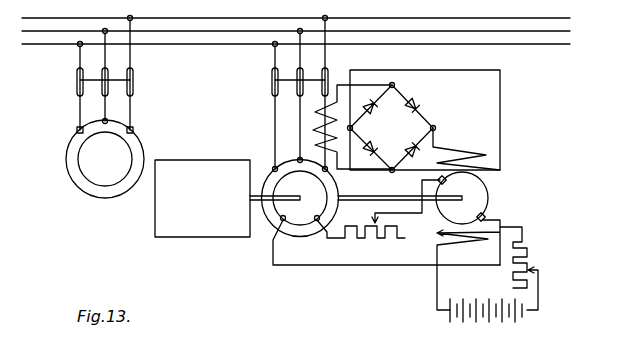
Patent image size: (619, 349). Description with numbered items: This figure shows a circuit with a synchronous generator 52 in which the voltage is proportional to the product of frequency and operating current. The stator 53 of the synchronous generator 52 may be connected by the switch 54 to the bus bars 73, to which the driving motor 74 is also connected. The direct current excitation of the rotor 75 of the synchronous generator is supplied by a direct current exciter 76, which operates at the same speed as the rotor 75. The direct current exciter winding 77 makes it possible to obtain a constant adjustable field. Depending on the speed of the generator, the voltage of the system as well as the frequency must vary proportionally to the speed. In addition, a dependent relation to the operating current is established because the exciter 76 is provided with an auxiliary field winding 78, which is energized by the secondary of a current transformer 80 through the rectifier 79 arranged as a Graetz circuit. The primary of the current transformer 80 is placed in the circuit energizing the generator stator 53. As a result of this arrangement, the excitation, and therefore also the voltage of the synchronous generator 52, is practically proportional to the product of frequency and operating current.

The bus bars 73 is at (218, 46).
The switch 54 is at (272, 80).
The driving motor 74 is at (68, 147).
The current transformer 80 is at (313, 124).
The rectifier 79 is at (402, 135).
The auxiliary field winding 78 is at (468, 150).
The stator 53 is at (274, 167).
The synchronous generator 52 is at (372, 192).
The direct current exciter 76 is at (488, 196).
The rotor 75 is at (283, 228).
The direct current exciter winding 77 is at (467, 243).